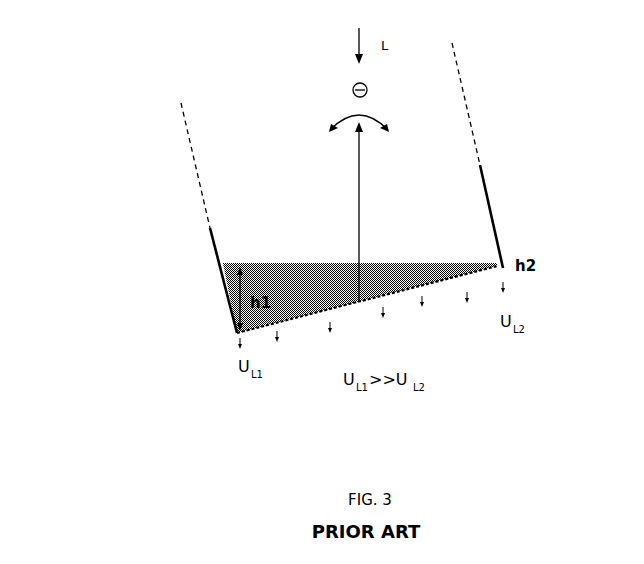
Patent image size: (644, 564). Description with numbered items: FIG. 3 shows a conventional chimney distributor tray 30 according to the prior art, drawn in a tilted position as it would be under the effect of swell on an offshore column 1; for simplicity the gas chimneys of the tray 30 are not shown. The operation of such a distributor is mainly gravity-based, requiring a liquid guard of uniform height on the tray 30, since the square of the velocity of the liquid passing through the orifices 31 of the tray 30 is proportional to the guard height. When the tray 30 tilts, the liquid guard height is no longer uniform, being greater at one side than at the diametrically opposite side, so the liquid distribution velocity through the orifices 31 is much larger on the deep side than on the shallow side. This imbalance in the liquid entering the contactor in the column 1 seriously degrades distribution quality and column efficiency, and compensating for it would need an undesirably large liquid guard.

The column 1 is at (466, 100).
The tray 30 is at (226, 309).
The orifices 31 is at (438, 288).